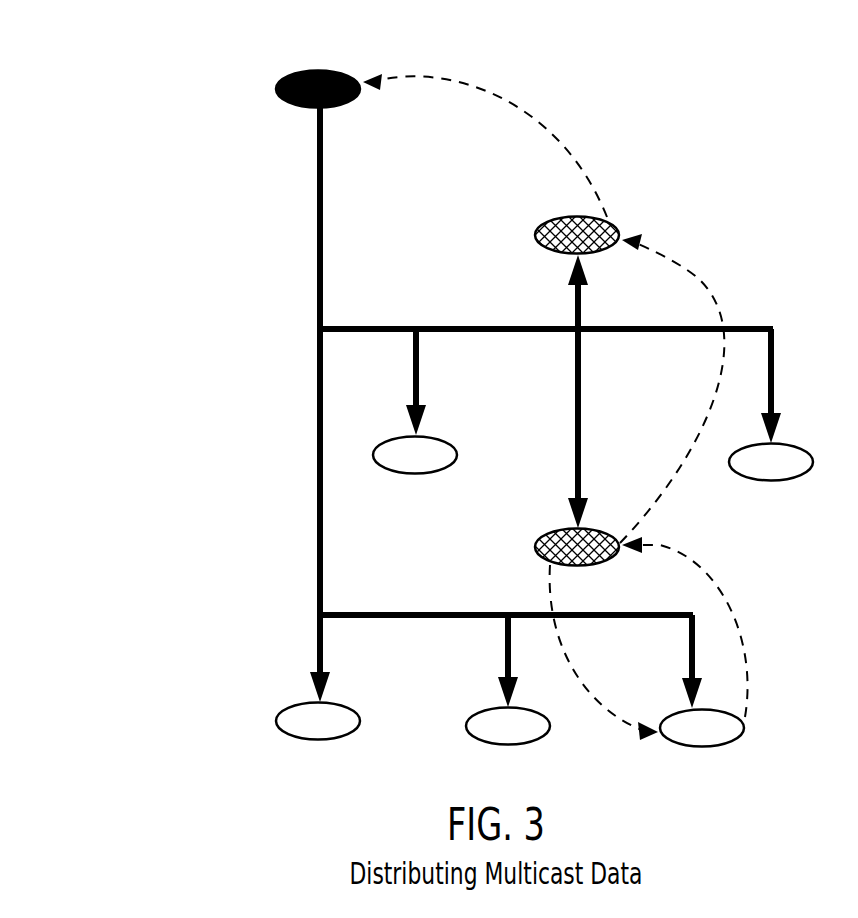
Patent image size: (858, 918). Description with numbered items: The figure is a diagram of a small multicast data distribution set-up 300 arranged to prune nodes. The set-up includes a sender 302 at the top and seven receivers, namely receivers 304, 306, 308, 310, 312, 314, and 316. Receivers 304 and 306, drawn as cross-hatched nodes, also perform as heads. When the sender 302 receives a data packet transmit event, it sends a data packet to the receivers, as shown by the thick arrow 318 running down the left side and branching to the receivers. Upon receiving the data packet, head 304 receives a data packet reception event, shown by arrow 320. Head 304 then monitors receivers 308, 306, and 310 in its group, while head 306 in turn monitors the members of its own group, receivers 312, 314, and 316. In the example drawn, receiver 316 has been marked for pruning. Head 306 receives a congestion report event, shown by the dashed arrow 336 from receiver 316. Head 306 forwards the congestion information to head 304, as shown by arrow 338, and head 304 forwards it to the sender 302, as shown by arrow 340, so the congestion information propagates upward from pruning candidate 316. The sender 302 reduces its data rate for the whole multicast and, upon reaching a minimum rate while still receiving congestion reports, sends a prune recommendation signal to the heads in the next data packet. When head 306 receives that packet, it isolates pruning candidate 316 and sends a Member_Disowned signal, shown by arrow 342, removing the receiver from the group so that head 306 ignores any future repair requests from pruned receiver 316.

The multicast data distribution set-up 300 is at (103, 68).
The sender 302 is at (318, 71).
The receiver (head) 304 is at (552, 220).
The receiver (head) 306 is at (538, 542).
The receiver 308 is at (402, 474).
The receiver 310 is at (767, 481).
The receiver 312 is at (303, 740).
The receiver 314 is at (490, 745).
The receiver (pruning candidate) 316 is at (698, 747).
The arrow 318 is at (318, 243).
The arrow 320 is at (574, 315).
The arrow 336 is at (748, 633).
The arrow 338 is at (693, 272).
The arrow 340 is at (525, 122).
The arrow 342 is at (600, 712).